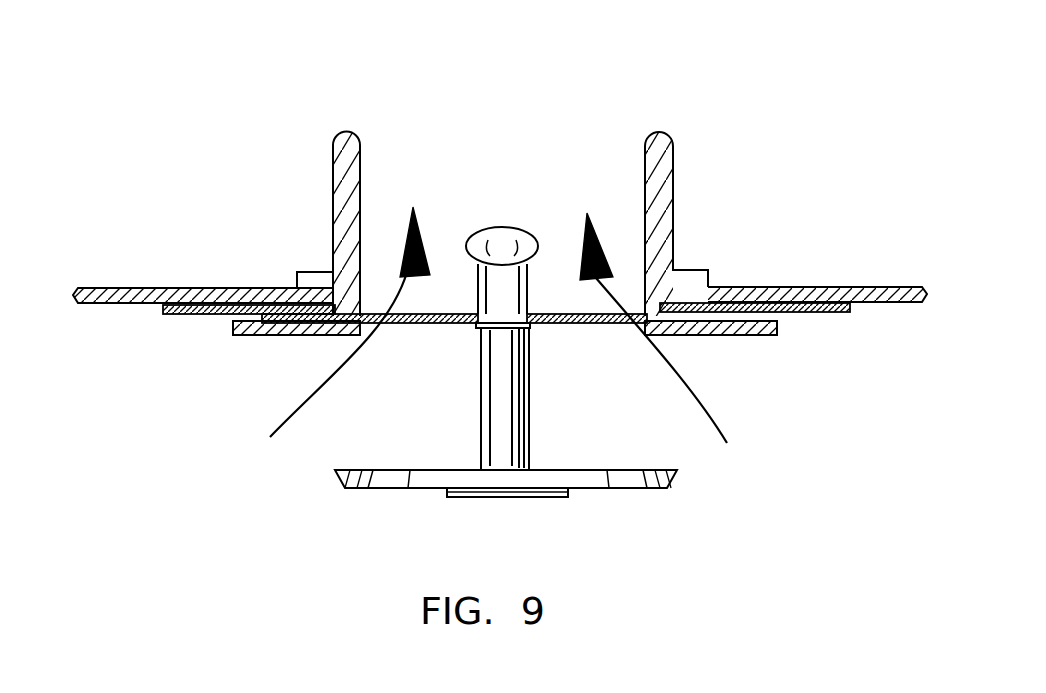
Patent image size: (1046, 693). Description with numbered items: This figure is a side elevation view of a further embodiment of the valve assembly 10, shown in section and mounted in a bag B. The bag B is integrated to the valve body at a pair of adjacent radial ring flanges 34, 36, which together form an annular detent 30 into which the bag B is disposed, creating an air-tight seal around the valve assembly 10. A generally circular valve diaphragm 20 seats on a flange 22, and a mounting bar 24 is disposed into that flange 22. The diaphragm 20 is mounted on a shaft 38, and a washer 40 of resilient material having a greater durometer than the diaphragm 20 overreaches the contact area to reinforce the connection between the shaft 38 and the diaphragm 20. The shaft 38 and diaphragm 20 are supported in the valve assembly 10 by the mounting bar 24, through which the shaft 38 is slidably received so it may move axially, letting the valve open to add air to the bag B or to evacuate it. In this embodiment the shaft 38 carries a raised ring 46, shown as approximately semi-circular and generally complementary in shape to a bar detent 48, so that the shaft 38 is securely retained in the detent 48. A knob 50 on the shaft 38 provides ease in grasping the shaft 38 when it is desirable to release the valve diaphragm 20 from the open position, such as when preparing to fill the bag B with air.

The valve assembly 10 is at (730, 112).
The valve diaphragm 20 is at (640, 488).
The flange 22 is at (777, 322).
The mounting bar 24 is at (578, 328).
The annular detent 30 is at (297, 287).
The radial ring flange 34 is at (193, 320).
The radial ring flange 36 is at (310, 275).
The shaft 38 is at (473, 387).
The washer 40 is at (452, 496).
The raised ring 46 is at (516, 312).
The bar detent 48 is at (470, 313).
The knob 50 is at (508, 226).
The bag B is at (813, 285).